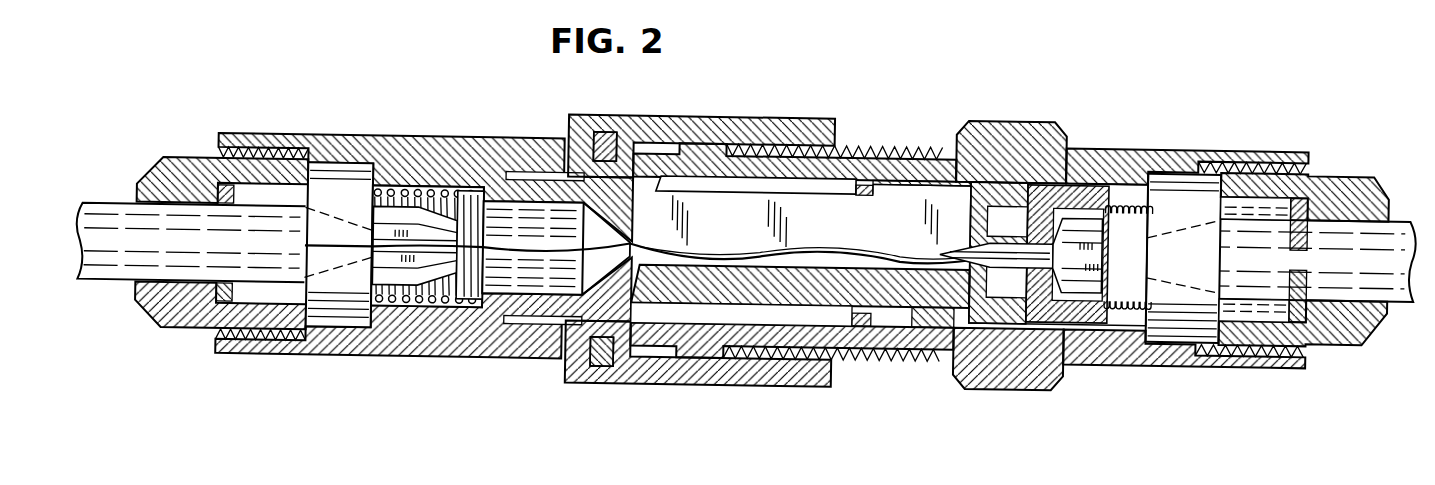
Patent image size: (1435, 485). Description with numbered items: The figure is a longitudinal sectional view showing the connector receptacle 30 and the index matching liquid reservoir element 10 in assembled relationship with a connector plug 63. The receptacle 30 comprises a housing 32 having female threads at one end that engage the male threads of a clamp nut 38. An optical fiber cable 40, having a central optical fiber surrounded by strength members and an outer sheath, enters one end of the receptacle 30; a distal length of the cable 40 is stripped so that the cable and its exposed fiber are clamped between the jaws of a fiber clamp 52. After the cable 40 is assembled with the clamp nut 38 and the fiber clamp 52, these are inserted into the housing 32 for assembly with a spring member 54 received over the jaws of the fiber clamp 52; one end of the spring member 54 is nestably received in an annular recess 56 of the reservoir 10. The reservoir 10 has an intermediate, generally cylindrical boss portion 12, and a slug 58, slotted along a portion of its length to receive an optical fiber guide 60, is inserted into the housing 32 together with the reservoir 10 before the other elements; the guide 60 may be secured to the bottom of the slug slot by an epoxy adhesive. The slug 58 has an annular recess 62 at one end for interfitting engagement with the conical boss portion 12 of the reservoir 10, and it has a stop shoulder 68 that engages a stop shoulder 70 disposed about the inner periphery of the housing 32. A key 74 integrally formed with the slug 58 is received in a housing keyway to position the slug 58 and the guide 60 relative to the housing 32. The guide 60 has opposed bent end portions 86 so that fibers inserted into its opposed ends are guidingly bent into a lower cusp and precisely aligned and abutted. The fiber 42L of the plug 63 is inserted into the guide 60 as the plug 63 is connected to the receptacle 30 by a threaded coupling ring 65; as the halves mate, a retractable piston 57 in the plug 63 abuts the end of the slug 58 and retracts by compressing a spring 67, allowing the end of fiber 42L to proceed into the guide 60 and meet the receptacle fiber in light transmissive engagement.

The index matching liquid reservoir element 10 is at (1068, 197).
The boss portion 12 is at (1059, 198).
The connector receptacle 30 is at (1186, 198).
The housing 32 is at (1004, 126).
The clamp nut 38 is at (1304, 210).
The optical fiber cable 40 is at (746, 251).
The fiber 42L is at (555, 309).
The fiber clamp 52 is at (763, 251).
The spring member 54 is at (1077, 200).
The annular recess 56 is at (1153, 191).
The retractable piston 57 is at (425, 211).
The slug 58 is at (801, 213).
The optical fiber guide 60 is at (801, 244).
The annular recess 62 is at (980, 196).
The connector plug 63 is at (428, 185).
The threaded coupling ring 65 is at (700, 226).
The spring 67 is at (448, 181).
The stop shoulder 68 is at (843, 255).
The stop shoulder 70 is at (757, 129).
The key 74 is at (780, 361).
The bent end portions 86 is at (648, 226).